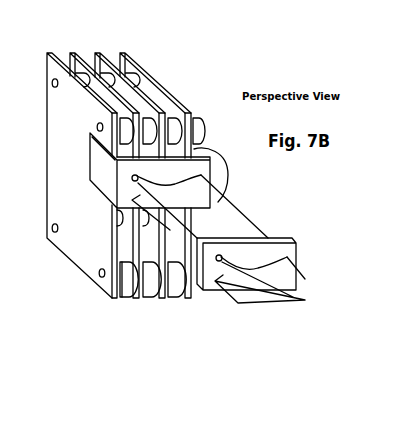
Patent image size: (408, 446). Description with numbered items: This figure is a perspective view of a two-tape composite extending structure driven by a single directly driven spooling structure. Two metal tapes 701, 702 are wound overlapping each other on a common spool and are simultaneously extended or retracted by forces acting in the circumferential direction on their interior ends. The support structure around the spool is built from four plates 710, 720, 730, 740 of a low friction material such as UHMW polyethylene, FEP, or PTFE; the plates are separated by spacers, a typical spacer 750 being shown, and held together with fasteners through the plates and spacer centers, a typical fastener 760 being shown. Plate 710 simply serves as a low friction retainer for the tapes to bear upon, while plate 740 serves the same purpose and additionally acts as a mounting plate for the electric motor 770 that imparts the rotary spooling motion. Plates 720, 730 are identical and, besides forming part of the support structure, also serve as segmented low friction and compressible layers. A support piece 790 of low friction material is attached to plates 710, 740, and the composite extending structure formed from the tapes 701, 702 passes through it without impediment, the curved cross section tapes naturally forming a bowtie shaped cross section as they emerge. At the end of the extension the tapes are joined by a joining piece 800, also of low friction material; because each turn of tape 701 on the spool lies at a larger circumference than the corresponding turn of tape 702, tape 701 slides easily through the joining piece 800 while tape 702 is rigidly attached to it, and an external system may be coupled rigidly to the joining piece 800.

The plate 710 is at (51, 53).
The plate 720 is at (71, 53).
The plate 730 is at (96, 53).
The plate 740 is at (122, 53).
The spacer 750 is at (122, 278).
The fastener 760 is at (97, 273).
The electric motor 770 is at (210, 149).
The support piece 790 is at (98, 188).
The joining piece 800 is at (287, 245).
The metal tape 701 is at (237, 218).
The metal tape 702 is at (143, 222).